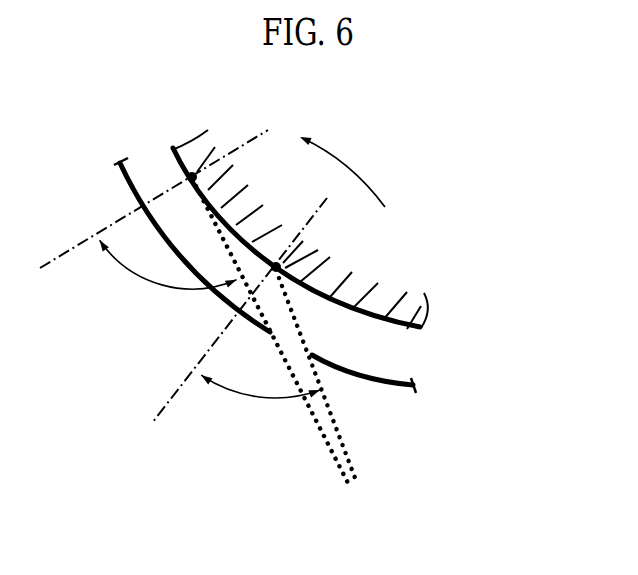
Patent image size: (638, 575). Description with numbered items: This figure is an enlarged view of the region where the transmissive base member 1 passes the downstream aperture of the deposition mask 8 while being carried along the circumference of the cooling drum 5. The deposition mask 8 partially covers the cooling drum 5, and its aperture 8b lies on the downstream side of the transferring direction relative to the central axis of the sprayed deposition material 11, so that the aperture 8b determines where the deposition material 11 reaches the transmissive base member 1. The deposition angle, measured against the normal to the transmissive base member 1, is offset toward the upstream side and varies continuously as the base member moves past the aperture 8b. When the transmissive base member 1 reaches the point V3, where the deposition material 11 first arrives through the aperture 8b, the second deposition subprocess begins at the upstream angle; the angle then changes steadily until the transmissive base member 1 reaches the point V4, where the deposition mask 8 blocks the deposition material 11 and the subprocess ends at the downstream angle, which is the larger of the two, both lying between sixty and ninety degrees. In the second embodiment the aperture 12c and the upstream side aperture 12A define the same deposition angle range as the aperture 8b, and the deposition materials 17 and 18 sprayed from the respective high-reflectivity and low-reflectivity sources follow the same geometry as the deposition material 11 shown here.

The transmissive base member 1 is at (403, 330).
The cooling drum 5 is at (393, 238).
The deposition mask 8 is at (392, 386).
The aperture 8b is at (203, 315).
The aperture 12c is at (203, 315).
The upstream side aperture 12A is at (288, 348).
The deposition material 11 is at (381, 358).
The deposition material 17 is at (381, 358).
The deposition material 18 is at (350, 438).
The point V4 is at (186, 177).
The point V3 is at (280, 267).